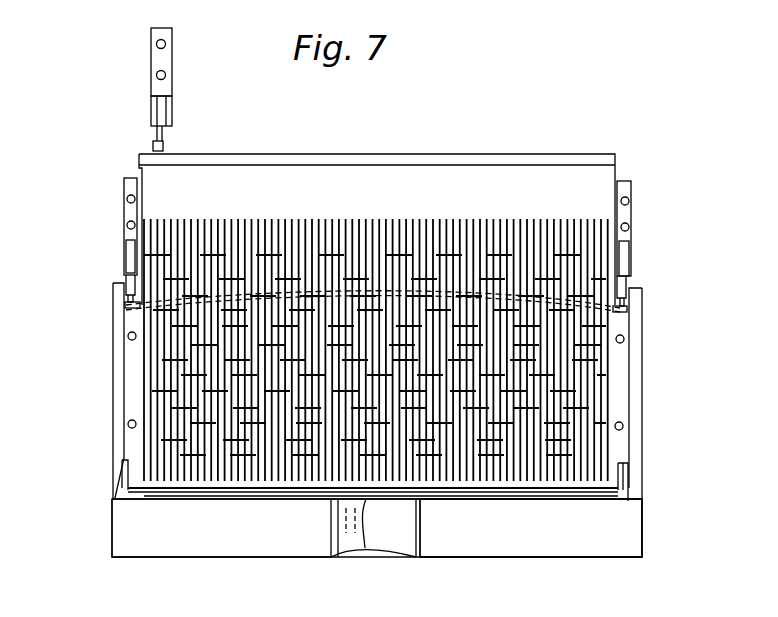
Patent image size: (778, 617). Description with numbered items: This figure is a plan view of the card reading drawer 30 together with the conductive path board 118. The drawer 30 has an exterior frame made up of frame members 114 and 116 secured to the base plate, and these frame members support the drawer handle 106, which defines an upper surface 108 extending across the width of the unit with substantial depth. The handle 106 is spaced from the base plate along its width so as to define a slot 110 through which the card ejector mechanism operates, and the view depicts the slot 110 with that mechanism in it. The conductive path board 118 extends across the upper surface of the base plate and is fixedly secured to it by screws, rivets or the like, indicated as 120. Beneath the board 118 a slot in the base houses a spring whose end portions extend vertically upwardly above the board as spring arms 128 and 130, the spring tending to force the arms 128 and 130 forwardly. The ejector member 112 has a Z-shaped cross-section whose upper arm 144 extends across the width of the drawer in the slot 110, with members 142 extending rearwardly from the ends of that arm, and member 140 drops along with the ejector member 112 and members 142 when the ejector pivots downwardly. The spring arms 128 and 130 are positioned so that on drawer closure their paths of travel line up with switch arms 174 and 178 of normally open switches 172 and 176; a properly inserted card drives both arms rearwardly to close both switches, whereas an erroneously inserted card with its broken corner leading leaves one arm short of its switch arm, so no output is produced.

The drawer 30 is at (628, 555).
The drawer handle 106 is at (552, 551).
The upper surface 108 is at (458, 535).
The slot 110 is at (590, 484).
The ejector member 112 is at (357, 540).
The frame member 114 is at (105, 381).
The frame member 116 is at (628, 395).
The conductive path board 118 is at (563, 165).
The screws or rivets 120 is at (616, 330).
The spring arm 128 is at (117, 297).
The spring arm 130 is at (618, 300).
The member 140 is at (113, 462).
The members 142 is at (622, 478).
The upper arm 144 is at (203, 489).
The normally open switch 172 is at (118, 192).
The switch arm 174 is at (118, 282).
The normally open switch 176 is at (624, 204).
The switch arm 178 is at (620, 275).